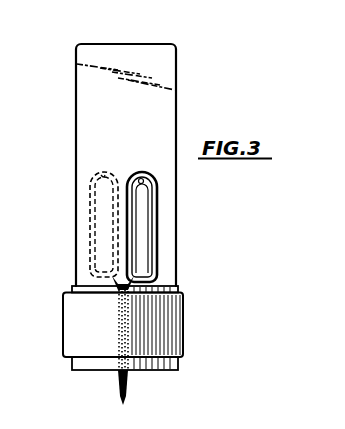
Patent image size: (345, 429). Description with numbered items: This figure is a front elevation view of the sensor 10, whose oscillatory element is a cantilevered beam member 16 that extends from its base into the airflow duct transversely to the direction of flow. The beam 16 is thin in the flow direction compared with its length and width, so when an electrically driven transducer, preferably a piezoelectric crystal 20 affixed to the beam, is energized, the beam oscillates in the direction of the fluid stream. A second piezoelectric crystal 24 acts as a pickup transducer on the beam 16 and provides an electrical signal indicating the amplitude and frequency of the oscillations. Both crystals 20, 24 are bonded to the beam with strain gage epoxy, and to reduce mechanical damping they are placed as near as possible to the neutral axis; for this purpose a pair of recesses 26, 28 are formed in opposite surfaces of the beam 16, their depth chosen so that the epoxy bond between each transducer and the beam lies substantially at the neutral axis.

The sensor 10 is at (198, 86).
The cantilevered beam member 16 is at (76, 120).
The piezoelectric crystal (drive transducer) 20 is at (148, 221).
The piezoelectric crystal (pickup transducer) 24 is at (97, 213).
The recess 26 is at (141, 178).
The recess 28 is at (102, 175).